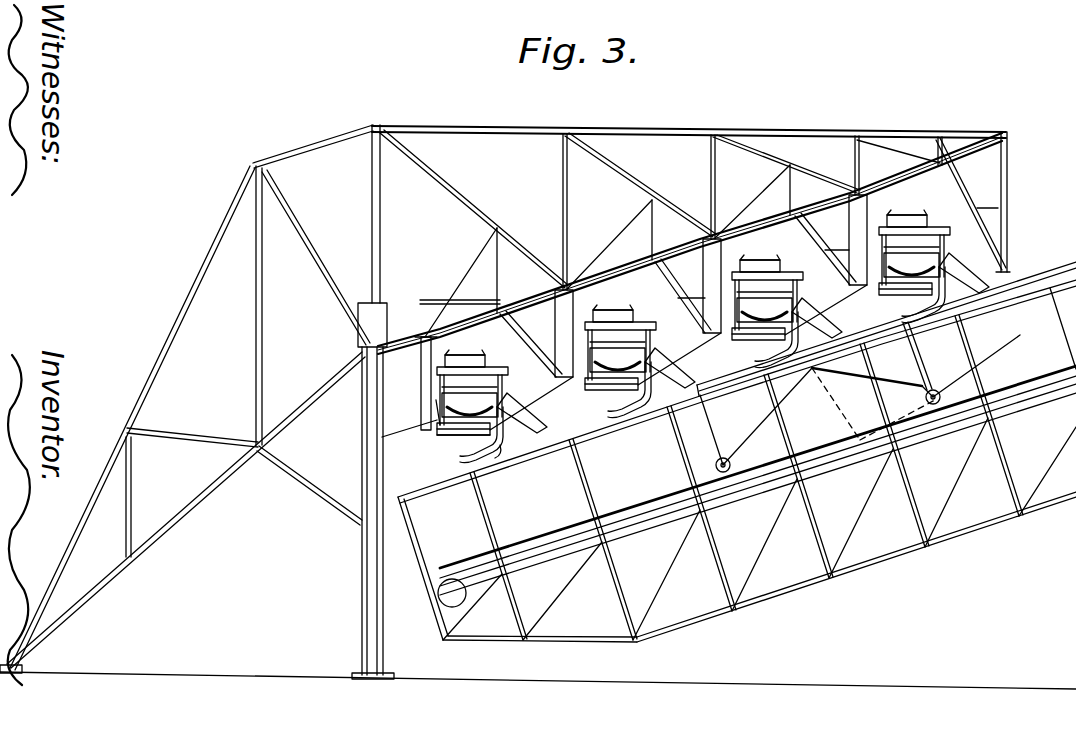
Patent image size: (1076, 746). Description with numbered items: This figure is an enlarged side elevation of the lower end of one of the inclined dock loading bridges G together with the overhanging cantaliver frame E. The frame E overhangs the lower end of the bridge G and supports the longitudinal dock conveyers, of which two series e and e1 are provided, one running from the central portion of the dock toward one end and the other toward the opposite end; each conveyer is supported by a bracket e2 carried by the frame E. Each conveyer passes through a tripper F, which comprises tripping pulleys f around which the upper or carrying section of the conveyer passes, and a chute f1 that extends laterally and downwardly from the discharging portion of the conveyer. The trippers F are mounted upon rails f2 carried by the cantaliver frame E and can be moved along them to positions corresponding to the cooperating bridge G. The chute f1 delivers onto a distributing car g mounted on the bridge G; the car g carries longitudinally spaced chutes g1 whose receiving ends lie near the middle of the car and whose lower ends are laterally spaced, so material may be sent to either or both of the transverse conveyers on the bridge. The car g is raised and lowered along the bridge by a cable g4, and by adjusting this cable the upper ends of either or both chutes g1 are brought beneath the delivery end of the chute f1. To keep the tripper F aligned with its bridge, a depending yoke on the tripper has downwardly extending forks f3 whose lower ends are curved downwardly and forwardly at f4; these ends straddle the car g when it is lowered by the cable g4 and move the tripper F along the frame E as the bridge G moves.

The cantaliver frame E is at (691, 260).
The dock loading bridge G is at (1026, 294).
The tripper F is at (483, 336).
The tripping pulleys f is at (462, 356).
The chute f1 is at (535, 420).
The rails f2 is at (440, 412).
The forks f3 is at (585, 417).
The curved lower ends of forks f4 is at (462, 435).
The dock conveyer e is at (425, 462).
The dock conveyer e1 is at (702, 365).
The bracket e2 is at (624, 374).
The distributing car g is at (958, 388).
The chutes g1 is at (815, 395).
The cable g4 is at (886, 329).